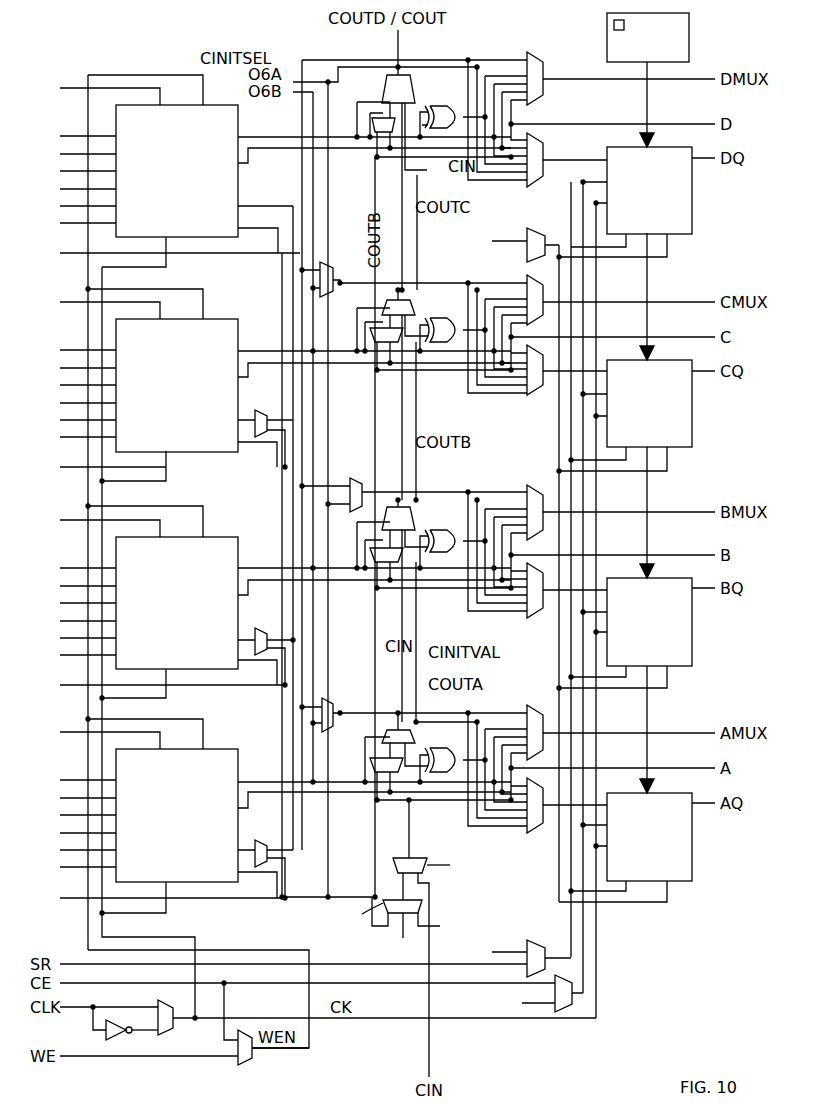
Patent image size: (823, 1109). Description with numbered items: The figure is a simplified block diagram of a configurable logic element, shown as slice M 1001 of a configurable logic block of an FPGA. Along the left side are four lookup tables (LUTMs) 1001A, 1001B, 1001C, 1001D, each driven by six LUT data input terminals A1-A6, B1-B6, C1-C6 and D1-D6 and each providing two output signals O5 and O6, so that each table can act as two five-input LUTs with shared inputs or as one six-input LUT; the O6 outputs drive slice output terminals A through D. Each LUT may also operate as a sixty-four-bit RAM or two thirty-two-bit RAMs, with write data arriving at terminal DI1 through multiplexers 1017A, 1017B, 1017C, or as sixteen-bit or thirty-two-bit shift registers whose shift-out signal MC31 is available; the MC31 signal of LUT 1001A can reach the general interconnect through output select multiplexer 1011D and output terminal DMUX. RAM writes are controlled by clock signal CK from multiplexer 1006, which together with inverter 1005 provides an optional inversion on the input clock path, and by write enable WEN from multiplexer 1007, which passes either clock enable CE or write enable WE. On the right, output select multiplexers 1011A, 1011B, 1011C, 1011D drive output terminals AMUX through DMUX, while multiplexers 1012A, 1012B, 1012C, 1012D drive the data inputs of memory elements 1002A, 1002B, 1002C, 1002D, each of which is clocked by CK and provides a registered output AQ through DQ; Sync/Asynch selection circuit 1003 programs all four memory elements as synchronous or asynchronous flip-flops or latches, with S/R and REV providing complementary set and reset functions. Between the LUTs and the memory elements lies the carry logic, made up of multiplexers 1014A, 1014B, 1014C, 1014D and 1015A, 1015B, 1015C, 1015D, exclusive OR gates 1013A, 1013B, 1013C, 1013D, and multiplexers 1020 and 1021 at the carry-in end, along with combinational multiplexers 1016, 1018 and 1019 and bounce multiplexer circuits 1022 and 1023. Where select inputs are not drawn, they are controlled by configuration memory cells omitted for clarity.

The slice M 1001 is at (152, 60).
The lookup table (LUTM) 1001D is at (202, 171).
The lookup table (LUTM) 1001C is at (196, 385).
The lookup table (LUTM) 1001B is at (196, 603).
The lookup table (LUTM) 1001A is at (196, 815).
The memory element 1002D is at (624, 203).
The memory element 1002C is at (624, 416).
The memory element 1002B is at (624, 634).
The memory element 1002A is at (625, 847).
The Sync/Asynch selection circuit 1003 is at (606, 46).
The inverter 1005 is at (118, 1042).
The multiplexer 1006 is at (172, 1030).
The multiplexer 1007 is at (244, 1066).
The output select multiplexer 1011D is at (545, 95).
The output select multiplexer 1011C is at (530, 275).
The output select multiplexer 1011B is at (530, 486).
The output select multiplexer 1011A is at (530, 705).
The multiplexer 1012D is at (545, 150).
The multiplexer 1012C is at (530, 395).
The multiplexer 1012B is at (530, 615).
The multiplexer 1012A is at (530, 830).
The exclusive OR gate 1013D is at (445, 97).
The exclusive OR gate 1013C is at (445, 312).
The exclusive OR gate 1013B is at (445, 524).
The exclusive OR gate 1013A is at (445, 744).
The carry logic multiplexer 1014D is at (408, 80).
The carry logic multiplexer 1014C is at (392, 298).
The carry logic multiplexer 1014B is at (392, 506).
The carry logic multiplexer 1014A is at (390, 729).
The carry logic multiplexer 1015D is at (372, 128).
The carry logic multiplexer 1015C is at (398, 345).
The carry logic multiplexer 1015B is at (398, 565).
The carry logic multiplexer 1015A is at (398, 775).
The combinational multiplexer 1016 is at (326, 270).
The multiplexer 1017C is at (261, 440).
The multiplexer 1017B is at (261, 658).
The multiplexer 1017A is at (261, 870).
The combinational multiplexer 1018 is at (352, 482).
The combinational multiplexer 1019 is at (328, 732).
The carry logic multiplexer 1020 is at (422, 906).
The carry logic multiplexer 1021 is at (540, 218).
The bounce multiplexer circuit 1022 is at (540, 934).
The bounce multiplexer circuit 1023 is at (560, 1013).